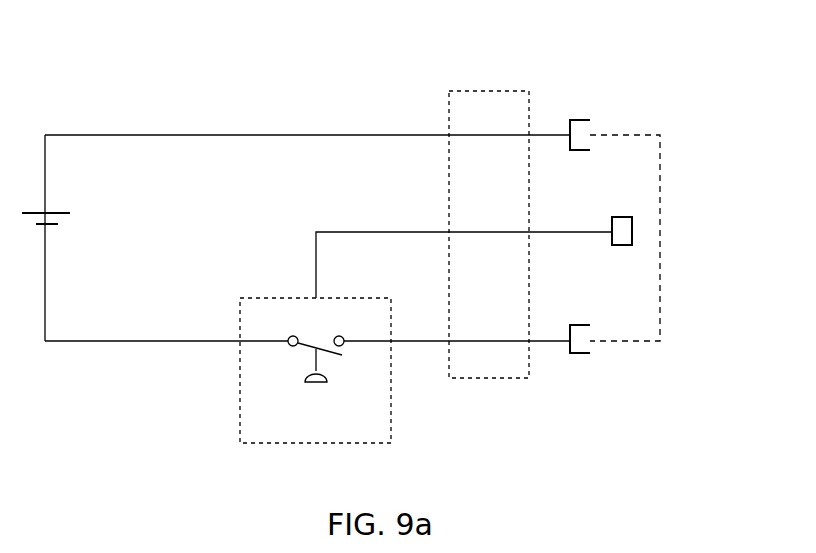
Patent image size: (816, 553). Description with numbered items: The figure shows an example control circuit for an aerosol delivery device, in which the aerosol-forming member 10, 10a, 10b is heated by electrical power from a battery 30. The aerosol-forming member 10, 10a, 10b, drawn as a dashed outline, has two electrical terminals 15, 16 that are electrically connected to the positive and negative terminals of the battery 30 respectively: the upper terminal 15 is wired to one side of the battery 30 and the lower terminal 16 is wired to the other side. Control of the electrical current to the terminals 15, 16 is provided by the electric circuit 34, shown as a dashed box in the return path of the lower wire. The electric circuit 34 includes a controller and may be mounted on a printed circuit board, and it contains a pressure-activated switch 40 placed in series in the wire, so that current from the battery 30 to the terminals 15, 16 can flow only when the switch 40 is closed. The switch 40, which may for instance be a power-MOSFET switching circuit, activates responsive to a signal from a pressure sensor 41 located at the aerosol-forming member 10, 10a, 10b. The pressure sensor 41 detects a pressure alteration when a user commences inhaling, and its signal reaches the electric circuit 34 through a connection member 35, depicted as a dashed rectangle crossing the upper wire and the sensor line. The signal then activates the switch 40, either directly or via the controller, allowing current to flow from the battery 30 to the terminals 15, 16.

The battery 30 is at (70, 219).
The connection member 35 is at (491, 91).
The electrical terminal 15 is at (583, 119).
The aerosol-forming member 10 is at (682, 218).
The aerosol-forming member 10a is at (625, 238).
The aerosol-forming member 10b is at (660, 207).
The pressure sensor 41 is at (620, 217).
The pressure-activated switch 40 is at (290, 322).
The electric circuit 34 is at (391, 403).
The electrical terminal 16 is at (575, 355).